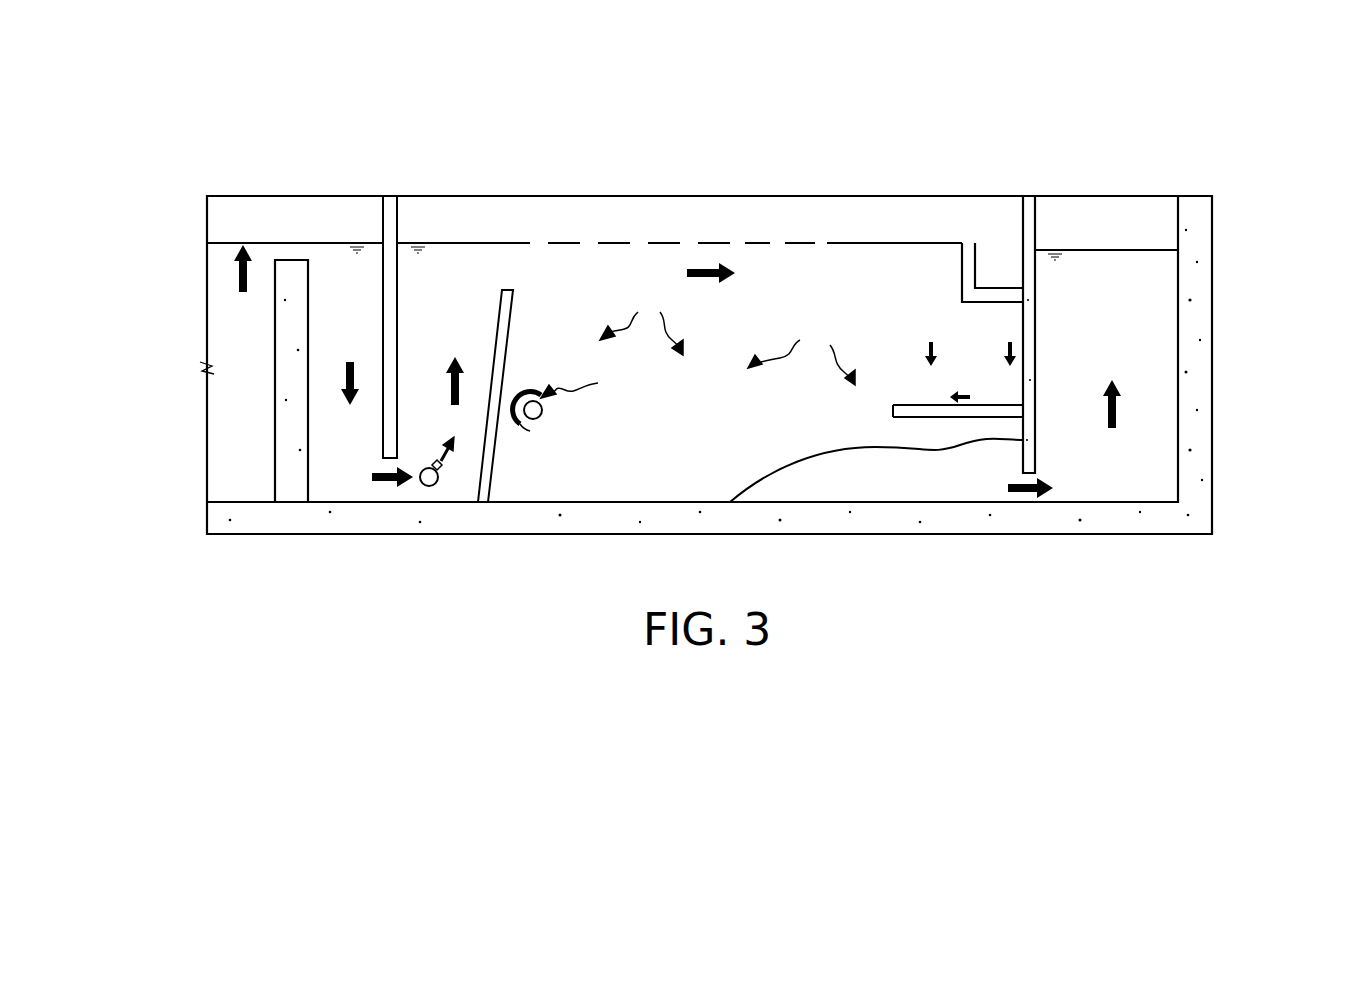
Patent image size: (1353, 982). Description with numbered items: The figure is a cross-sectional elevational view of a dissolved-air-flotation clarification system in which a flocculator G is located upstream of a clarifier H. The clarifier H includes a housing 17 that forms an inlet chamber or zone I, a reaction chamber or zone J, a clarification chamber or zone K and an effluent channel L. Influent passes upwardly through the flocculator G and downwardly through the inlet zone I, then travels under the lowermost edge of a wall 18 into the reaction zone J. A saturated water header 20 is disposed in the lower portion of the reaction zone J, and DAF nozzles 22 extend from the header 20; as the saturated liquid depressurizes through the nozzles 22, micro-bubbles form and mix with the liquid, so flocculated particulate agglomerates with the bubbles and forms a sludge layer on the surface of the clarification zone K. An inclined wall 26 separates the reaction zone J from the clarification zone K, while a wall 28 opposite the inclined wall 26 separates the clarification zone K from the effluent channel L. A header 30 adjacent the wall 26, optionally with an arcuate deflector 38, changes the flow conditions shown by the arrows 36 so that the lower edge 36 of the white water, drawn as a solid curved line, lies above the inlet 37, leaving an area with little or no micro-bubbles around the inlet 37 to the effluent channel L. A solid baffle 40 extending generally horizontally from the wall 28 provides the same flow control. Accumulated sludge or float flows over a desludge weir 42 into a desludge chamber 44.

The housing 17 is at (930, 535).
The wall 18 is at (383, 212).
The saturated water header 20 is at (432, 488).
The DAF nozzles 22 is at (433, 466).
The inclined wall 26 is at (513, 300).
The wall 28 is at (1035, 330).
The header 30 is at (543, 413).
The lower edge of white water 36 is at (790, 467).
The inlet 37 is at (1023, 477).
The deflector 38 is at (530, 431).
The baffle 40 is at (900, 405).
The desludge weir 42 is at (965, 243).
The desludge chamber 44 is at (998, 258).
The flocculator G is at (228, 330).
The clarifier H is at (637, 178).
The inlet chamber I is at (335, 482).
The reaction chamber J is at (450, 290).
The clarification chamber K is at (797, 280).
The effluent channel L is at (1163, 306).